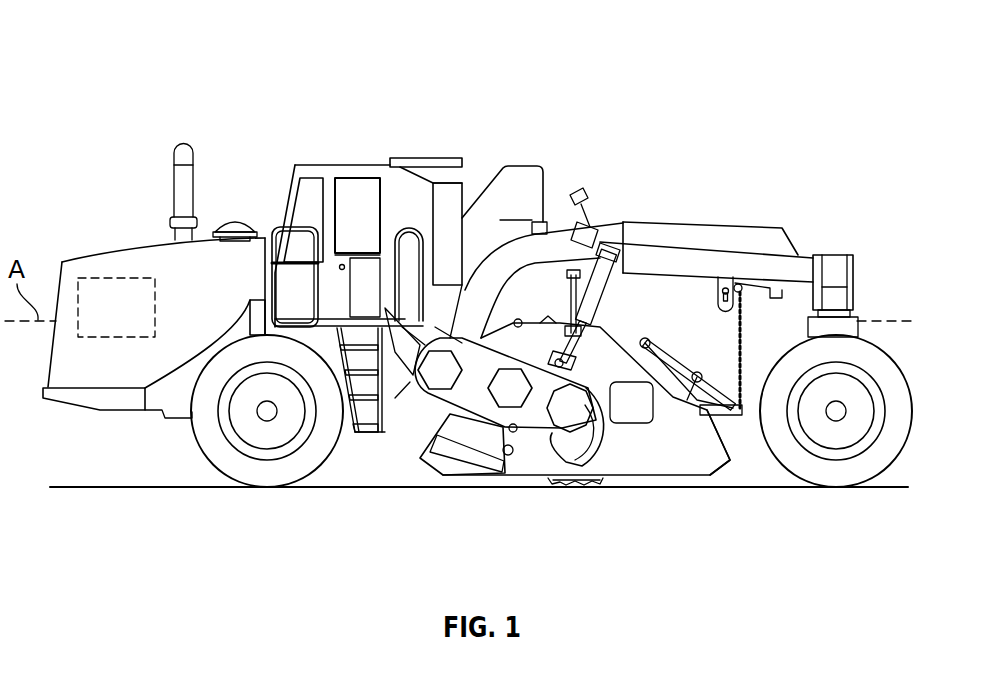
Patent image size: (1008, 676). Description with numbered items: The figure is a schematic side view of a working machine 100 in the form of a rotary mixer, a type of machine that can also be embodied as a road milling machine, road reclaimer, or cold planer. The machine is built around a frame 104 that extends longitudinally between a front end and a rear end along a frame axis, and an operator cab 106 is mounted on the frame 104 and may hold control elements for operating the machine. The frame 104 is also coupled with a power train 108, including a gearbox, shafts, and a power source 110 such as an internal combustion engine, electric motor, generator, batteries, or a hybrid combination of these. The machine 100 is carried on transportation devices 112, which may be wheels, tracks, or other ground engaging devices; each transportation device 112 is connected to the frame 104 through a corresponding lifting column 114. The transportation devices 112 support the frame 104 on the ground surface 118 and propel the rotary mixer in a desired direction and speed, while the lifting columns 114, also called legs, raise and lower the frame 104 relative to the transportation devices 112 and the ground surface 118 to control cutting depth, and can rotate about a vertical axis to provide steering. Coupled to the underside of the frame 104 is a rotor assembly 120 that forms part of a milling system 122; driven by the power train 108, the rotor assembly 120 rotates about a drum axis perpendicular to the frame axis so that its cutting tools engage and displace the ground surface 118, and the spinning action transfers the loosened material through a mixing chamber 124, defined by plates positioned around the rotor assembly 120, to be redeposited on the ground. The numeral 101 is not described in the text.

The working machine 100 is at (151, 67).
The frame 101 is at (151, 115).
The frame 104 is at (558, 251).
The operator cab 106 is at (345, 172).
The power train 108 is at (128, 430).
The power source 110 is at (140, 320).
The transportation devices 112 is at (268, 478).
The lifting columns 114 is at (258, 300).
The ground surface 118 is at (122, 489).
The rotor assembly 120 is at (558, 481).
The milling system 122 is at (694, 486).
The mixing chamber 124 is at (630, 452).